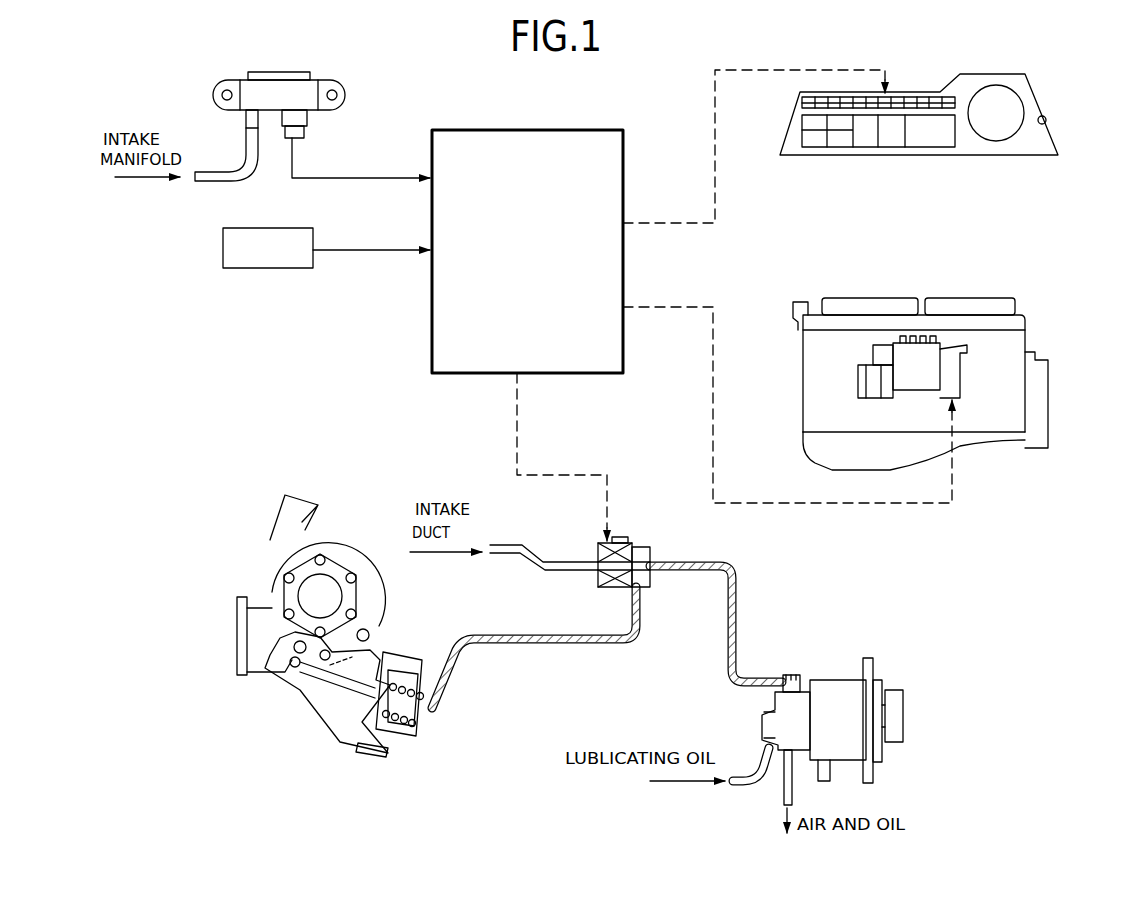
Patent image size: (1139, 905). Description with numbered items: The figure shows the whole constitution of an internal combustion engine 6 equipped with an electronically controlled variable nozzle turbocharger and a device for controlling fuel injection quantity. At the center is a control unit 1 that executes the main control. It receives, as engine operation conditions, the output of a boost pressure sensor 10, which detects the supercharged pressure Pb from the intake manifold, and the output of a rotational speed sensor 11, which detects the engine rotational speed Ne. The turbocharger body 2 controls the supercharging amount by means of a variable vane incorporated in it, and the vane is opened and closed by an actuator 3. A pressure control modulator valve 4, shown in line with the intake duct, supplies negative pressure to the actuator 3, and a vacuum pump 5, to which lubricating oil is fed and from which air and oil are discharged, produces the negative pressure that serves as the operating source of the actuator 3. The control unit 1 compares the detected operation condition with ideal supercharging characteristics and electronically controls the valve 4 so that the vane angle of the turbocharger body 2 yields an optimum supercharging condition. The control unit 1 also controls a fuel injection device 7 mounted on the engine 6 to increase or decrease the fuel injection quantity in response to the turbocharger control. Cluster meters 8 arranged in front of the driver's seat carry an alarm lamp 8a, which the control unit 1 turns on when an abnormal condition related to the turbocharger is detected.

The control unit 1 is at (532, 130).
The turbocharger body 2 is at (308, 684).
The actuator 3 is at (415, 735).
The pressure control modulator valve 4 is at (643, 541).
The vacuum pump 5 is at (838, 680).
The internal combustion engine 6 is at (950, 351).
The fuel injection device 7 is at (920, 365).
The cluster meters 8 is at (952, 97).
The alarm lamp 8a is at (893, 101).
The boost pressure sensor 10 is at (215, 86).
The rotational speed sensor 11 is at (223, 250).